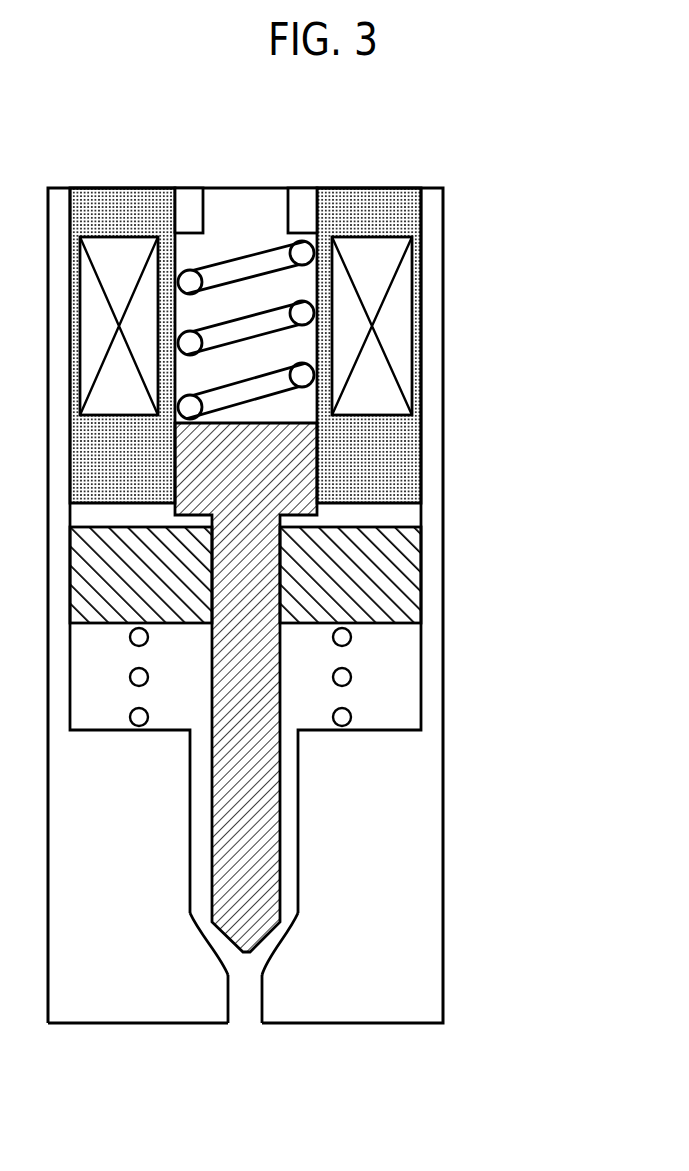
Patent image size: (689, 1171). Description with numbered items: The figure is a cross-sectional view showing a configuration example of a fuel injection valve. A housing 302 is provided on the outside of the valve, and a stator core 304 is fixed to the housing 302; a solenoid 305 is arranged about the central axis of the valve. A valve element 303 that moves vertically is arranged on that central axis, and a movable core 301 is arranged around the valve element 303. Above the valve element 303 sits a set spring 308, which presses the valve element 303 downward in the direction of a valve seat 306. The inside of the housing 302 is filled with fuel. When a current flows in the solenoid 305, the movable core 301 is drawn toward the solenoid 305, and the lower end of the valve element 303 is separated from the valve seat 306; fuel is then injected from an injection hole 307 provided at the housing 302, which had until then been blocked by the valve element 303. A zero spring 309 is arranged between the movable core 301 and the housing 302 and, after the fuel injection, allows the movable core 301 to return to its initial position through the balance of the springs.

The movable core 301 is at (403, 568).
The housing 302 is at (403, 925).
The valve element 303 is at (243, 827).
The stator core 304 is at (403, 455).
The solenoid 305 is at (403, 328).
The valve seat 306 is at (283, 940).
The injection hole 307 is at (242, 1013).
The set spring 308 is at (245, 243).
The zero spring 309 is at (360, 662).